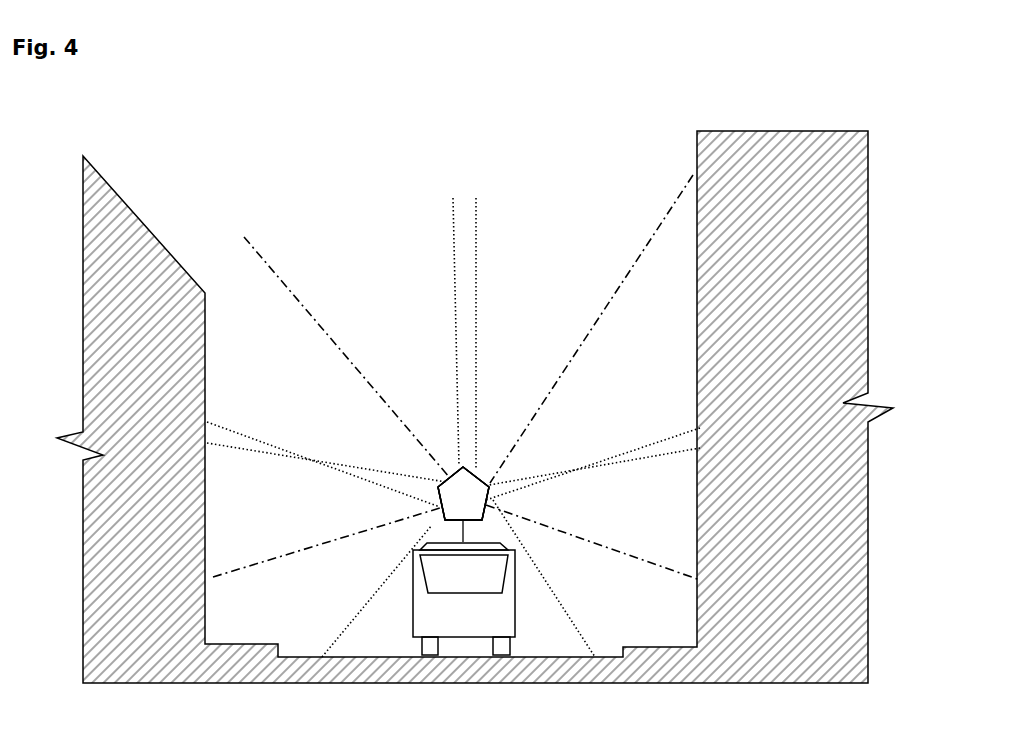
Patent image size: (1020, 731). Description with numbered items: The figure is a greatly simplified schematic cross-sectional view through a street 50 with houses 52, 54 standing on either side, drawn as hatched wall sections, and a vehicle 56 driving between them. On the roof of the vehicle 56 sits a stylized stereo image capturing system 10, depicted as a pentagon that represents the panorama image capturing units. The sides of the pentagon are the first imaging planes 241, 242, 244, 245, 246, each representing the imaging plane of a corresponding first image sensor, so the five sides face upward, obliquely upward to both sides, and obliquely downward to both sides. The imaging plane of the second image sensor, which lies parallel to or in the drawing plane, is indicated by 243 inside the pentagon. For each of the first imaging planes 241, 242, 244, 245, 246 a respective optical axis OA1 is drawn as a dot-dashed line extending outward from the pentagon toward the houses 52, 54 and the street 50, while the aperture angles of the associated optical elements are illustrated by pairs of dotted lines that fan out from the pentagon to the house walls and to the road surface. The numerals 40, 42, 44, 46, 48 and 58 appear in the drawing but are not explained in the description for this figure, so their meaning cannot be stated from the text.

The stereo image capturing system 10 is at (497, 432).
The first region 40 is at (583, 24).
The second region 42 is at (621, 24).
The third region 44 is at (661, 24).
The fourth region 46 is at (694, 24).
The fifth region 48 is at (731, 24).
The street 50 is at (386, 178).
The house 52 is at (125, 255).
The house 54 is at (762, 188).
The vehicle 56 is at (430, 616).
The regions 58 is at (516, 53).
The first imaging plane 241 is at (443, 522).
The first imaging plane 242 is at (438, 483).
The imaging plane of the second image sensor 243 is at (479, 507).
The first imaging plane 244 is at (448, 523).
The first imaging plane 245 is at (500, 492).
The first imaging plane 246 is at (488, 476).
The optical axis OA1 is at (256, 249).